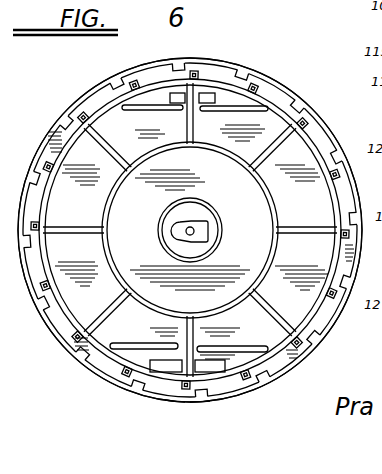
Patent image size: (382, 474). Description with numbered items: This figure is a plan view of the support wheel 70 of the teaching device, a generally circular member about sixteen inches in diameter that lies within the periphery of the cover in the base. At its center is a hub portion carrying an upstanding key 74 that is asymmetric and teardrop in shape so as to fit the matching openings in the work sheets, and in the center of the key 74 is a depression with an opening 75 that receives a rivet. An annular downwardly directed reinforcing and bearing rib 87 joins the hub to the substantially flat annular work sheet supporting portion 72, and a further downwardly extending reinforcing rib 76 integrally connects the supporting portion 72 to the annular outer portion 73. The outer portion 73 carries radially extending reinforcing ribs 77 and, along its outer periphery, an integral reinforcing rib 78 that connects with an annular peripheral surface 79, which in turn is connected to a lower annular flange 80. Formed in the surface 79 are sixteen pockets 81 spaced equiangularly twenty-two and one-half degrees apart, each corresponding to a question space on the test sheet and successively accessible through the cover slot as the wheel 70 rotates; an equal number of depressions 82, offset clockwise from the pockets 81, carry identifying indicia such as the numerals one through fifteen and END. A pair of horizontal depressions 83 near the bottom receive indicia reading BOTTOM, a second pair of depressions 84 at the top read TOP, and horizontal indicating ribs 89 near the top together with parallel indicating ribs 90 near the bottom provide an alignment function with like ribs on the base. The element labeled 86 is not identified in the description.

The support wheel 70 is at (252, 62).
The work sheet supporting portion 72 is at (220, 286).
The annular outer portion 73 is at (308, 288).
The key 74 is at (201, 231).
The opening 75 is at (198, 242).
The reinforcing rib 76 is at (148, 309).
The reinforcing ribs 77 is at (55, 150).
The reinforcing rib 78 is at (317, 148).
The annular peripheral surface 79 is at (175, 393).
The lower annular flange 80 is at (201, 402).
The pockets 81 is at (300, 103).
The depressions 82 is at (247, 392).
The depressions 83 is at (163, 368).
The depressions 84 is at (177, 93).
The right bar 86 is at (250, 107).
The reinforcing and bearing rib 87 is at (159, 229).
The indicating ribs 89 is at (135, 110).
The indicating ribs 90 is at (117, 350).